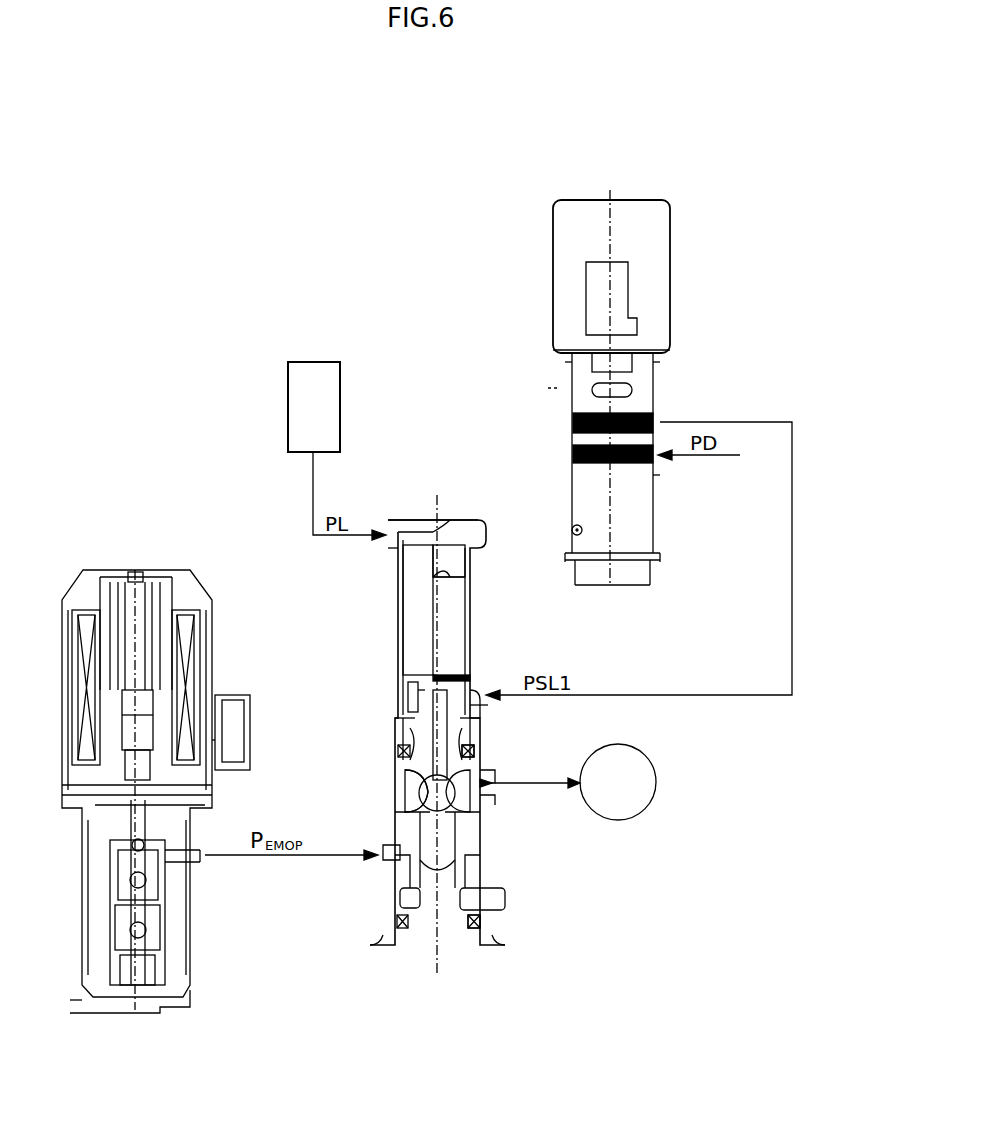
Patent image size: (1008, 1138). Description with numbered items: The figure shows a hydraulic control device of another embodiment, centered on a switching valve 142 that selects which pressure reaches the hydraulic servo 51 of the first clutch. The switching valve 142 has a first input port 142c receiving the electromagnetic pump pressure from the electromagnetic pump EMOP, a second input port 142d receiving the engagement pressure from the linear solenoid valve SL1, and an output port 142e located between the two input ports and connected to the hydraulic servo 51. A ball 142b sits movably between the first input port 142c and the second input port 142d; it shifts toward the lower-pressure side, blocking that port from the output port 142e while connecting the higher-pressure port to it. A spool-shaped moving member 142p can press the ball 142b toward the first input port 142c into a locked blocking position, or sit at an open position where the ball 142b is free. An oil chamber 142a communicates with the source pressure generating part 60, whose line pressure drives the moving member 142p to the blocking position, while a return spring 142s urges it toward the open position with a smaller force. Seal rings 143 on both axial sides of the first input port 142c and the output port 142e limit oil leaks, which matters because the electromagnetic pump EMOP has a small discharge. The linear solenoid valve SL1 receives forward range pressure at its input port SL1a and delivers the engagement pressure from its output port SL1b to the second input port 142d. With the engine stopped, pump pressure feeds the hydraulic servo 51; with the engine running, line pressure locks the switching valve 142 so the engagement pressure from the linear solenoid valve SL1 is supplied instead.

The source pressure generating part 60 is at (305, 362).
The linear solenoid valve SL1 is at (660, 163).
The input port SL1a is at (660, 460).
The output port SL1b is at (660, 415).
The hydraulic servo 51 is at (657, 782).
The electromagnetic pump EMOP is at (160, 538).
The switching valve 142 is at (545, 875).
The oil chamber 142a is at (447, 532).
The spool-shaped moving member 142p is at (412, 595).
The second input port 142d is at (478, 682).
The return spring 142s is at (405, 692).
The ball 142b is at (425, 790).
The output port 142e is at (490, 800).
The first input port 142c is at (385, 860).
The seal ring 143 is at (482, 748).